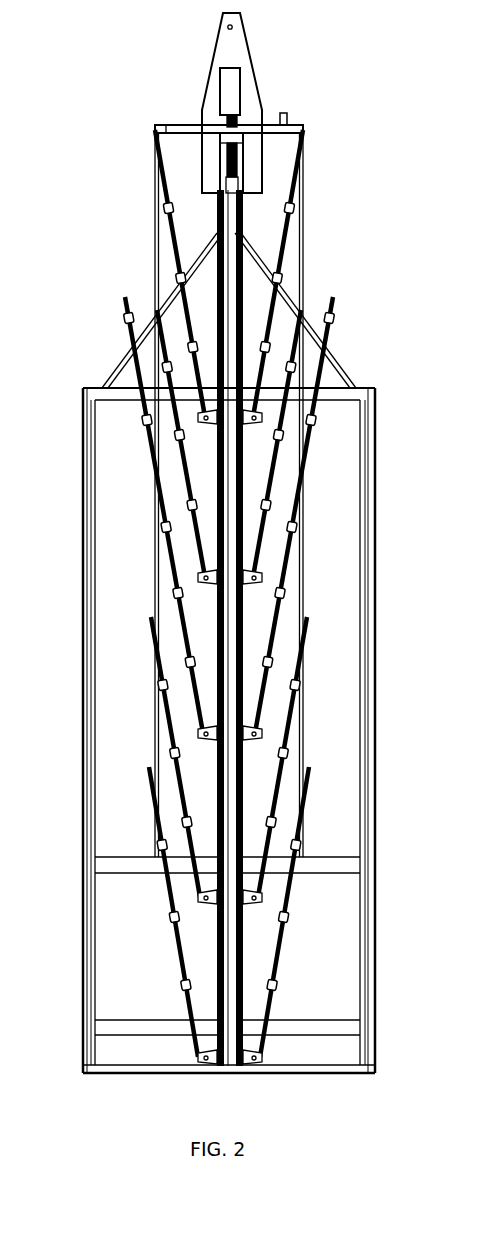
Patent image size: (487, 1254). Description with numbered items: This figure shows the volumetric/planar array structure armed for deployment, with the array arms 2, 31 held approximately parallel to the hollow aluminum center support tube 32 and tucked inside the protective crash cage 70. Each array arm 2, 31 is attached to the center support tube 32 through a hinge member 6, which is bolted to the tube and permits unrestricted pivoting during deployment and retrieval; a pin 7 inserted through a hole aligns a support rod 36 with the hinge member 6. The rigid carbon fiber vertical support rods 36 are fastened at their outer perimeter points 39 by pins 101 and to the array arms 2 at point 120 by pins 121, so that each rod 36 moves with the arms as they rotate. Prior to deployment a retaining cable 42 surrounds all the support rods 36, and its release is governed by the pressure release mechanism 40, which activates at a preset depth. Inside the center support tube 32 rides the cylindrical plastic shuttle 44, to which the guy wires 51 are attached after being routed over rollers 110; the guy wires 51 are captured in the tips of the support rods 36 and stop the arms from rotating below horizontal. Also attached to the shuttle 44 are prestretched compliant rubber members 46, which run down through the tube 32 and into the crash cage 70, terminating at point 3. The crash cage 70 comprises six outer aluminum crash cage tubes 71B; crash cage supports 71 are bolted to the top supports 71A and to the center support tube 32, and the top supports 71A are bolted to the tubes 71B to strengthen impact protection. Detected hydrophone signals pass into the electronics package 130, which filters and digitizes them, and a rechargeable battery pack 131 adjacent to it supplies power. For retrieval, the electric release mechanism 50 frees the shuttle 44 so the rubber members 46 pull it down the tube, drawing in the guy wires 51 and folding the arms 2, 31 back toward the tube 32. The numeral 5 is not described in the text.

The array arm 2 is at (284, 618).
The termination point 3 is at (84, 392).
The inner frame 5 is at (156, 150).
The hinge member 6 is at (205, 742).
The pin 7 is at (203, 735).
The array arm 31 is at (284, 840).
The center support tube 32 is at (252, 733).
The vertical support rod 36 is at (306, 292).
The outer perimeter point 39 is at (155, 627).
The pressure release mechanism 40 is at (293, 107).
The retaining cable 42 is at (307, 124).
The plastic shuttle 44 is at (246, 190).
The compliant rubber member 46 is at (247, 442).
The electric release mechanism 50 is at (228, 100).
The guy wire 51 is at (197, 118).
The protective crash cage 70 is at (376, 763).
The crash cage support 71 is at (120, 364).
The top support 71A is at (140, 406).
The crash cage tube 71B is at (375, 945).
The pin 101 is at (155, 604).
The roller 110 is at (486, 86).
The attachment point 120 is at (157, 470).
The pin 121 is at (157, 478).
The electronics package 130 is at (254, 174).
The rechargeable battery pack 131 is at (210, 172).